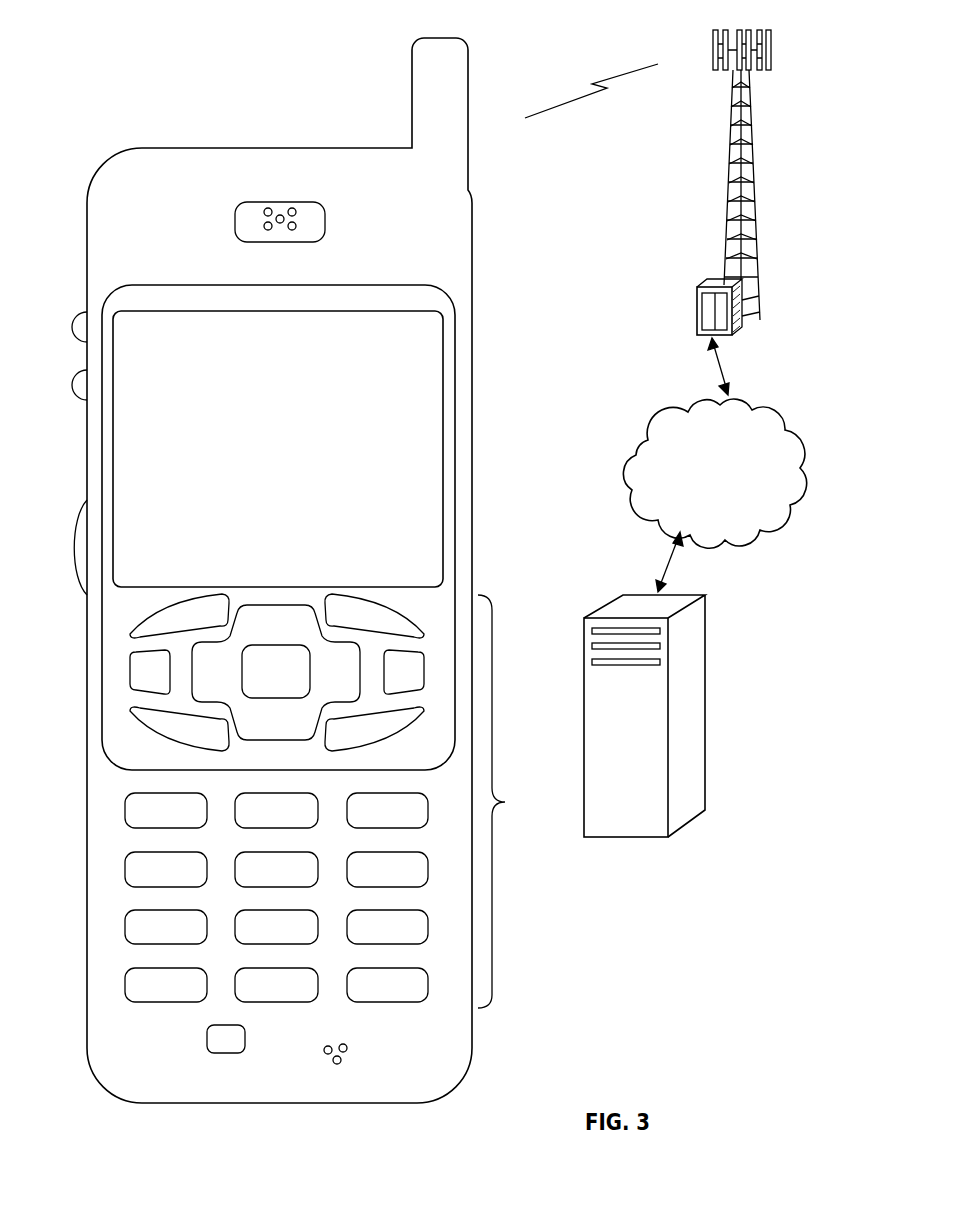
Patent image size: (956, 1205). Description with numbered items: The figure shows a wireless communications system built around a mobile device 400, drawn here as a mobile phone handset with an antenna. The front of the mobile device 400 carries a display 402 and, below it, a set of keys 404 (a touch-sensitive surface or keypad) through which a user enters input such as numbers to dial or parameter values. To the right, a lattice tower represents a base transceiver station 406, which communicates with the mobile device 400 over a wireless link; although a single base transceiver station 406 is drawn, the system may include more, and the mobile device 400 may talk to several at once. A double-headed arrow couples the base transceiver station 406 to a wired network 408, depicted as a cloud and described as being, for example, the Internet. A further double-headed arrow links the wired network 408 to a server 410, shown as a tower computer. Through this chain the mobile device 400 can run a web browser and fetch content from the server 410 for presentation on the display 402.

The mobile device 400 is at (139, 1103).
The display 402 is at (455, 320).
The keys 404 is at (330, 801).
The base transceiver station 406 is at (728, 197).
The wired network 408 is at (647, 511).
The server 410 is at (633, 838).